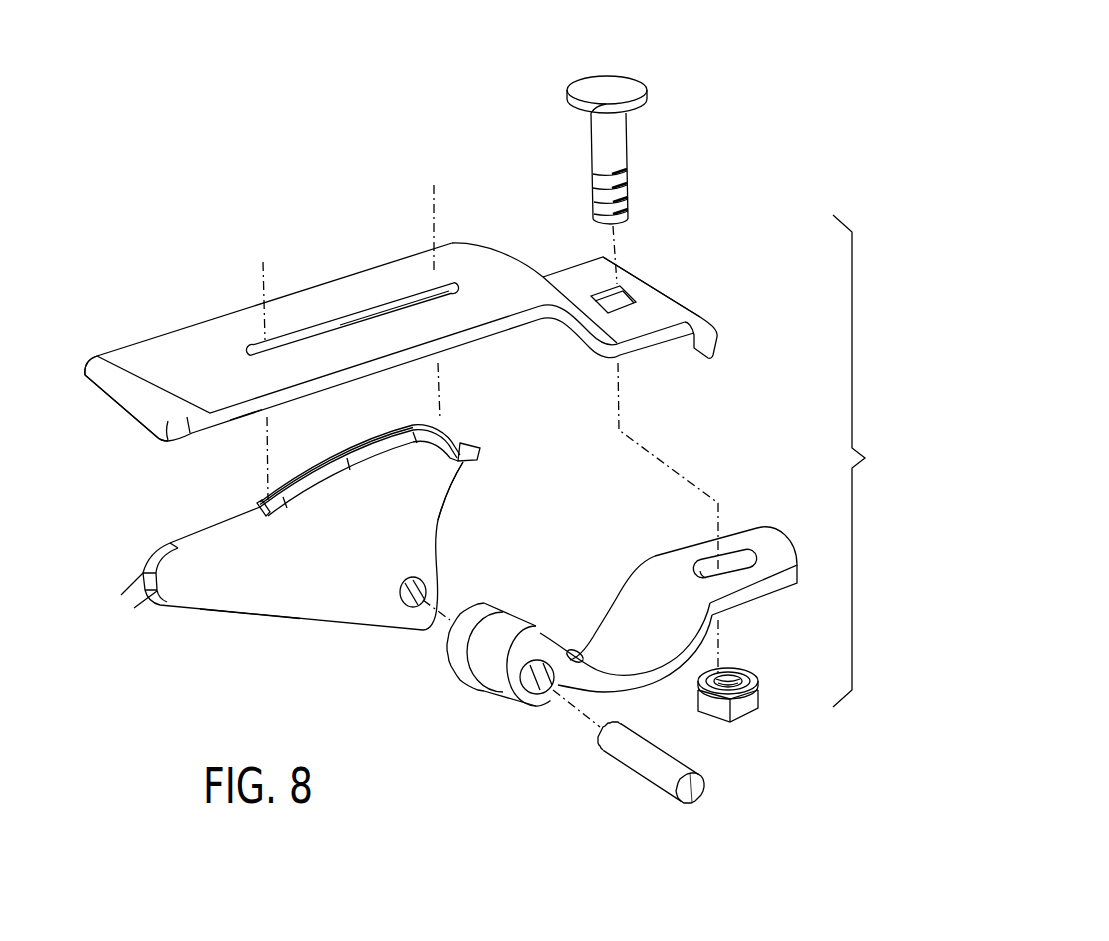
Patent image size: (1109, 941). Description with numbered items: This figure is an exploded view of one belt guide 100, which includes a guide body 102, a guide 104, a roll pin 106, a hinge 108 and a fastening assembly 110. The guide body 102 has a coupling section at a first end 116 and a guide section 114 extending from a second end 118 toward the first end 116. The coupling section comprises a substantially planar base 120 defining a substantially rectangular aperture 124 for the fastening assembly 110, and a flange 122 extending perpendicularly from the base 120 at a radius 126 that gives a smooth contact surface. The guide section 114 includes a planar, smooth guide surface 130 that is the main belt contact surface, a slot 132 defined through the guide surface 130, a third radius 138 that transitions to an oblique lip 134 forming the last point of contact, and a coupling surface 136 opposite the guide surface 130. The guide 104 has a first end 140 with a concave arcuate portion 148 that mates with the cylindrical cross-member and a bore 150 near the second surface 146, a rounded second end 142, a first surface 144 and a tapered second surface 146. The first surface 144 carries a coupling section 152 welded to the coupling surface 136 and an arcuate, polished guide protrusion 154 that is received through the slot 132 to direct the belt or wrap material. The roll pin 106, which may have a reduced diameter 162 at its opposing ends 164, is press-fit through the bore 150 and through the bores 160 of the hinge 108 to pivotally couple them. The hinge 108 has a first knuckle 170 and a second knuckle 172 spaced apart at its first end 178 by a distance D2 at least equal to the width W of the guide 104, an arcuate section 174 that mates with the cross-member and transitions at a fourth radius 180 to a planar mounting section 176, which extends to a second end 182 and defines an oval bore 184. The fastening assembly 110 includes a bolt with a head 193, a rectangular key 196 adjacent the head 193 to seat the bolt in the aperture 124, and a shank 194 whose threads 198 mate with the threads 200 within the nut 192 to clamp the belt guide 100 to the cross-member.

The belt guide 100 is at (870, 461).
The guide body 102 is at (450, 337).
The guide 104 is at (315, 526).
The roll pin 106 is at (650, 767).
The hinge 108 is at (613, 616).
The fastening assembly 110 is at (621, 127).
The guide section 114 is at (203, 307).
The first end 116 is at (756, 274).
The second end 118 is at (127, 429).
The base 120 is at (573, 258).
The flange 122 is at (717, 335).
The aperture 124 is at (619, 288).
The radius 126 is at (653, 287).
The guide surface 130 is at (450, 262).
The slot 132 is at (360, 307).
The lip 134 is at (172, 437).
The coupling surface 136 is at (246, 414).
The third radius 138 is at (110, 347).
The first end 140 is at (481, 506).
The second end 142 is at (97, 608).
The first surface 144 is at (461, 416).
The second surface 146 is at (270, 610).
The arcuate portion 148 is at (438, 522).
The bore 150 is at (415, 603).
The coupling section 152 is at (470, 444).
The guide protrusion 154 is at (374, 440).
The bores 160 is at (503, 623).
The reduced diameter 162 is at (608, 727).
The opposing ends 164 is at (600, 738).
The first knuckle 170 is at (478, 678).
The second knuckle 172 is at (458, 679).
The arcuate section 174 is at (597, 625).
The mounting section 176 is at (664, 549).
The first end 178 is at (474, 698).
The fourth radius 180 is at (635, 572).
The second end 182 is at (812, 584).
The bore 184 is at (738, 557).
The nut 192 is at (766, 701).
The head 193 is at (605, 87).
The shank 194 is at (640, 158).
The rectangular key 196 is at (597, 116).
The threads 198 is at (627, 200).
The threads 200 is at (735, 675).
The width W is at (155, 618).
The distance D2 is at (573, 617).